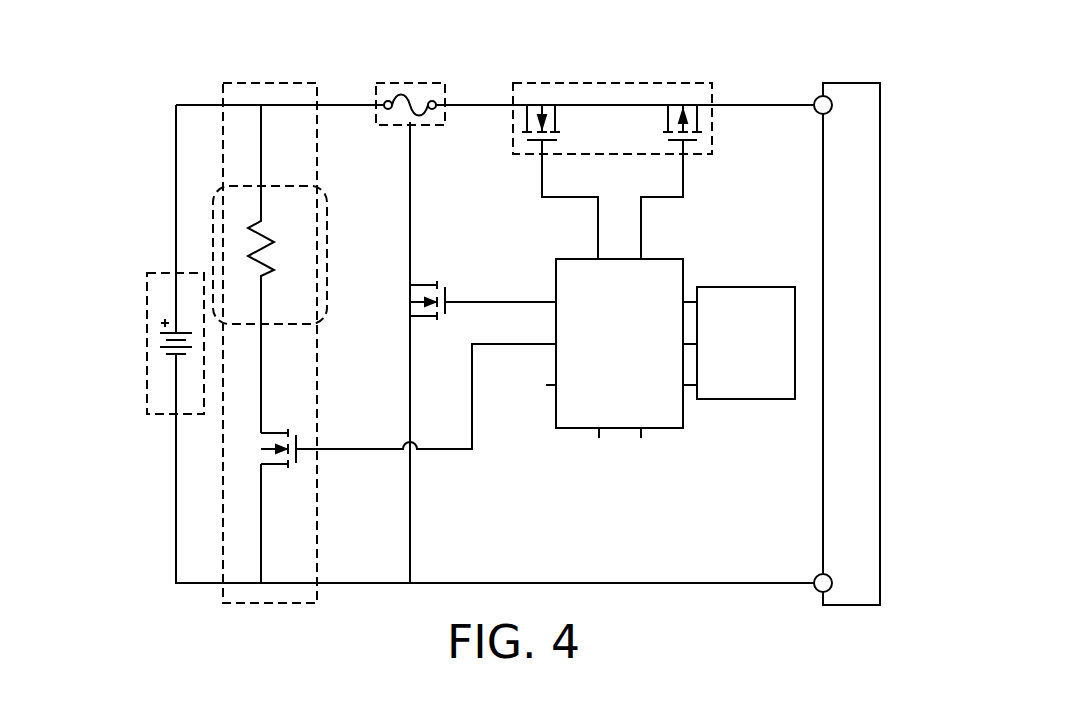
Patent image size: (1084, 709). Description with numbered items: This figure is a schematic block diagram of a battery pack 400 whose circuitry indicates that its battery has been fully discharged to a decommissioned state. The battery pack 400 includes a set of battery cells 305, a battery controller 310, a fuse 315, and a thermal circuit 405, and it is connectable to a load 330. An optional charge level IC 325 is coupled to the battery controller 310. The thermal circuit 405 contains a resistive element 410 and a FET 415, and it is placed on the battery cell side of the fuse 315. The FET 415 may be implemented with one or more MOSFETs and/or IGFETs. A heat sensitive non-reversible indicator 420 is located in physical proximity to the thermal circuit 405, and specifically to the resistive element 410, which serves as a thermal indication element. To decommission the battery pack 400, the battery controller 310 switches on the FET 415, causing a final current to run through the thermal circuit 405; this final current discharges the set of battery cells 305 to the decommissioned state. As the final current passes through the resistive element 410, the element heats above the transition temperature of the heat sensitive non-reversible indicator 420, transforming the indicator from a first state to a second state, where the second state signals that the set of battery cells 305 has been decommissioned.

The battery pack 400 is at (138, 587).
The thermal circuit 405 is at (256, 83).
The heat sensitive non-reversible indicator 420 is at (213, 212).
The resistive element 410 is at (282, 256).
The FET 415 is at (300, 428).
The set of battery cells 305 is at (147, 322).
The fuse 315 is at (411, 83).
The battery controller 310 is at (582, 430).
The charge level IC 325 is at (752, 400).
The load 330 is at (880, 327).